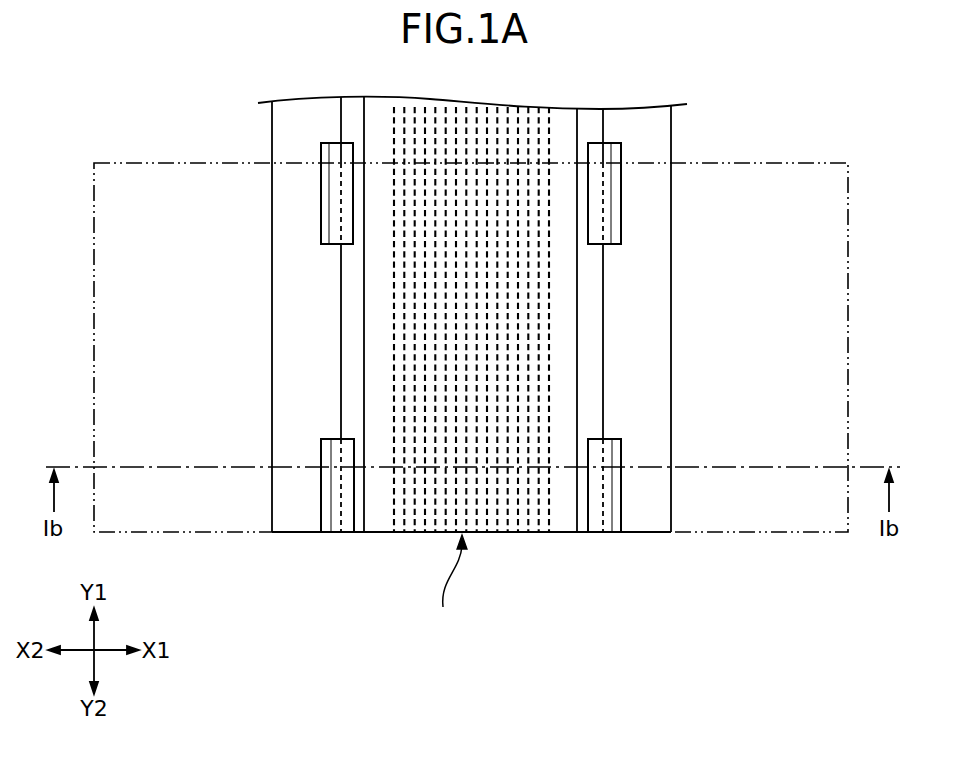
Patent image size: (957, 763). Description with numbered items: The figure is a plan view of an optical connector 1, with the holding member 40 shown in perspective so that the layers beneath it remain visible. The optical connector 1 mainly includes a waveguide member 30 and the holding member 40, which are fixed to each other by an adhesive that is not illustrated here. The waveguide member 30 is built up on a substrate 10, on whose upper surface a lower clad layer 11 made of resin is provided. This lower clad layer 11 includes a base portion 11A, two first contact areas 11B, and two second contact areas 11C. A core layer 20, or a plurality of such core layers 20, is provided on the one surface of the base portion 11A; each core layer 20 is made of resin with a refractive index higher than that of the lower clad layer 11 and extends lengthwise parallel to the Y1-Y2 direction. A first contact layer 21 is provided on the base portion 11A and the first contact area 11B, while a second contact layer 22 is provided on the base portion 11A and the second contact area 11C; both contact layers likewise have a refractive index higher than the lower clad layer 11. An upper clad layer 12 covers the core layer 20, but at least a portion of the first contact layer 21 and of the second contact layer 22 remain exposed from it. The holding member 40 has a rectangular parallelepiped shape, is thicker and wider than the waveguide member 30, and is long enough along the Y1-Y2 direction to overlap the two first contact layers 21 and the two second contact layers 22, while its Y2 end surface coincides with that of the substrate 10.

The optical connector 1 is at (874, 97).
The substrate 10 is at (649, 120).
The lower clad layer 11 is at (350, 404).
The base portion 11A is at (350, 282).
The first contact area 11B is at (617, 157).
The second contact area 11C is at (327, 156).
The upper clad layer 12 is at (562, 520).
The core layer 20 is at (418, 512).
The first contact layer 21 is at (597, 190).
The second contact layer 22 is at (345, 190).
The waveguide member 30 is at (449, 585).
The holding member 40 is at (778, 313).